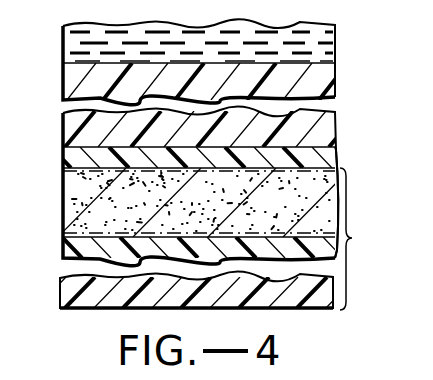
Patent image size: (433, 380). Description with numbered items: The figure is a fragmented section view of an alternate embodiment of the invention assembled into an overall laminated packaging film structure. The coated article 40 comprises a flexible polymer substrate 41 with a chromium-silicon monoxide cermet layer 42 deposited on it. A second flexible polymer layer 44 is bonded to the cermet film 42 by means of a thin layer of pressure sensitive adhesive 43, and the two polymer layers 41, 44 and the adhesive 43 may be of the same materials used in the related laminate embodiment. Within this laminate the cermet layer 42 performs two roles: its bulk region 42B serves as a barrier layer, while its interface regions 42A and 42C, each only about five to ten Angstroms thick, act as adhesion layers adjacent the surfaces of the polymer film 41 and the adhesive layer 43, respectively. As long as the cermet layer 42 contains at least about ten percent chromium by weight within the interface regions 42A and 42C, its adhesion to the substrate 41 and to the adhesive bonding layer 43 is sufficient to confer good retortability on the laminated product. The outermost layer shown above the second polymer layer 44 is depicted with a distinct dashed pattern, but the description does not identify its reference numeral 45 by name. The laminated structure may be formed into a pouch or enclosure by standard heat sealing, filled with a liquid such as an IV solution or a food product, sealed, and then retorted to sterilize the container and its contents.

The coated article 40 is at (385, 250).
The flexible polymer substrate 41 is at (64, 255).
The cermet layer 42 is at (63, 173).
The interface region 42A is at (66, 230).
The bulk region 42B is at (65, 201).
The interface region 42C is at (64, 168).
The pressure sensitive adhesive 43 is at (64, 156).
The second flexible polymer layer 44 is at (66, 79).
The protective cover layer 45 is at (66, 40).